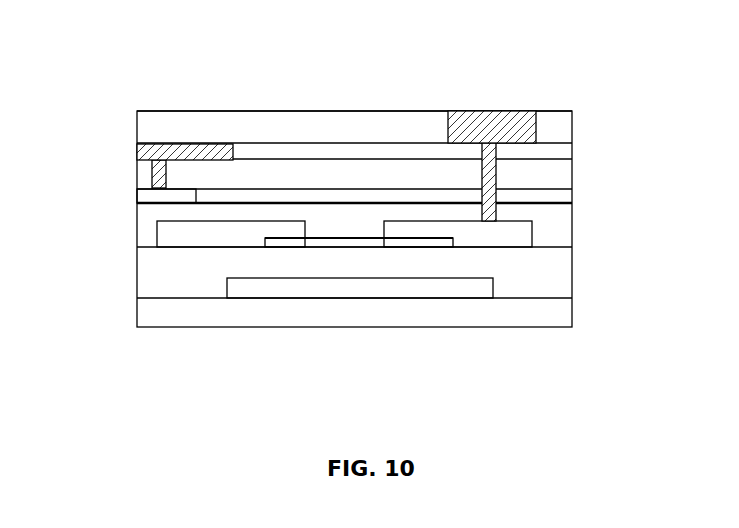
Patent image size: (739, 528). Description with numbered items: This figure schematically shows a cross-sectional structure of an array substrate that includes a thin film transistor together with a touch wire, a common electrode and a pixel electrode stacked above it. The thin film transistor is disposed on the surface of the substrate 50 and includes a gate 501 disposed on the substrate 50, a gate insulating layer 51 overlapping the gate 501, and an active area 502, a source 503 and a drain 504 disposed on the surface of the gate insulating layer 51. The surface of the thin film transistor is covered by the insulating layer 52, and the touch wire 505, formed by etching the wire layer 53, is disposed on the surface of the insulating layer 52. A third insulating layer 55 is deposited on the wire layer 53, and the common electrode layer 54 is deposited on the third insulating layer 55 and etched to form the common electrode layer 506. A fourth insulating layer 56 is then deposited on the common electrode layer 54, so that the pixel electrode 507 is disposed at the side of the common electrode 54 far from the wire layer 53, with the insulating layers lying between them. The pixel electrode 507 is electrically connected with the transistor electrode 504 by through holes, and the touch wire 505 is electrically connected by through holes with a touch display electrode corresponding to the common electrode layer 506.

The substrate 50 is at (357, 323).
The gate insulating layer 51 is at (557, 283).
The insulating layer 52 is at (557, 228).
The wire layer 53 is at (557, 200).
The common electrode layer 54 is at (557, 155).
The third insulating layer 55 is at (557, 168).
The fourth insulating layer 56 is at (549, 122).
The gate 501 is at (313, 292).
The active area 502 is at (290, 242).
The source 503 is at (191, 241).
The drain 504 is at (496, 241).
The touch wire 505 is at (146, 197).
The common electrode layer 506 is at (223, 145).
The pixel electrode 507 is at (483, 120).